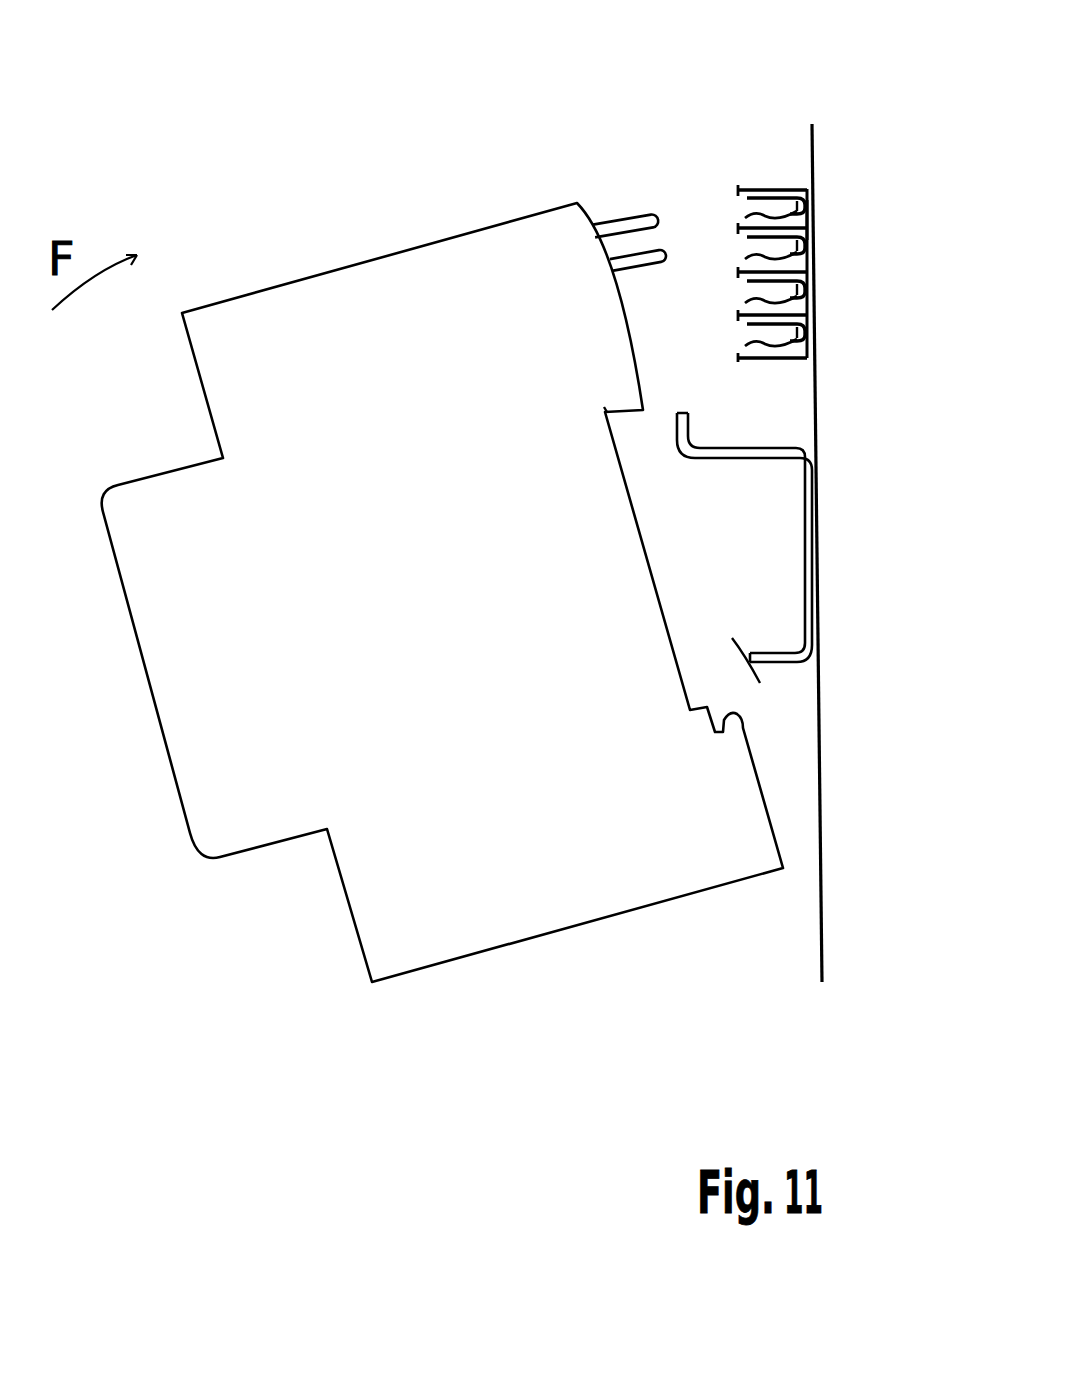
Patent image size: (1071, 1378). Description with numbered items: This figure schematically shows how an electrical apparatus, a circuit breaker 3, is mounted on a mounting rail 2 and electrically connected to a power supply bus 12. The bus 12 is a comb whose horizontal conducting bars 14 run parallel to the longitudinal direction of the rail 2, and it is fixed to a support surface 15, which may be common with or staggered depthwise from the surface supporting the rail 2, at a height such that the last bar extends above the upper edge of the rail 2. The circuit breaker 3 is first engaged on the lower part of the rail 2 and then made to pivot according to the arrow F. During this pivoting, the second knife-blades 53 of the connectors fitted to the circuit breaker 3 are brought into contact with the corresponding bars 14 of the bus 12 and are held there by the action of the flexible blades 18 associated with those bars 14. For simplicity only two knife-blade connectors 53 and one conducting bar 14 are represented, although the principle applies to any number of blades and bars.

The mounting rail 2 is at (725, 458).
The circuit breaker 3 is at (487, 226).
The power supply bus 12 is at (739, 181).
The conducting bar 14 is at (770, 205).
The support surface 15 is at (815, 433).
The flexible blade 18 is at (815, 223).
The second knife-blade 53 is at (660, 248).